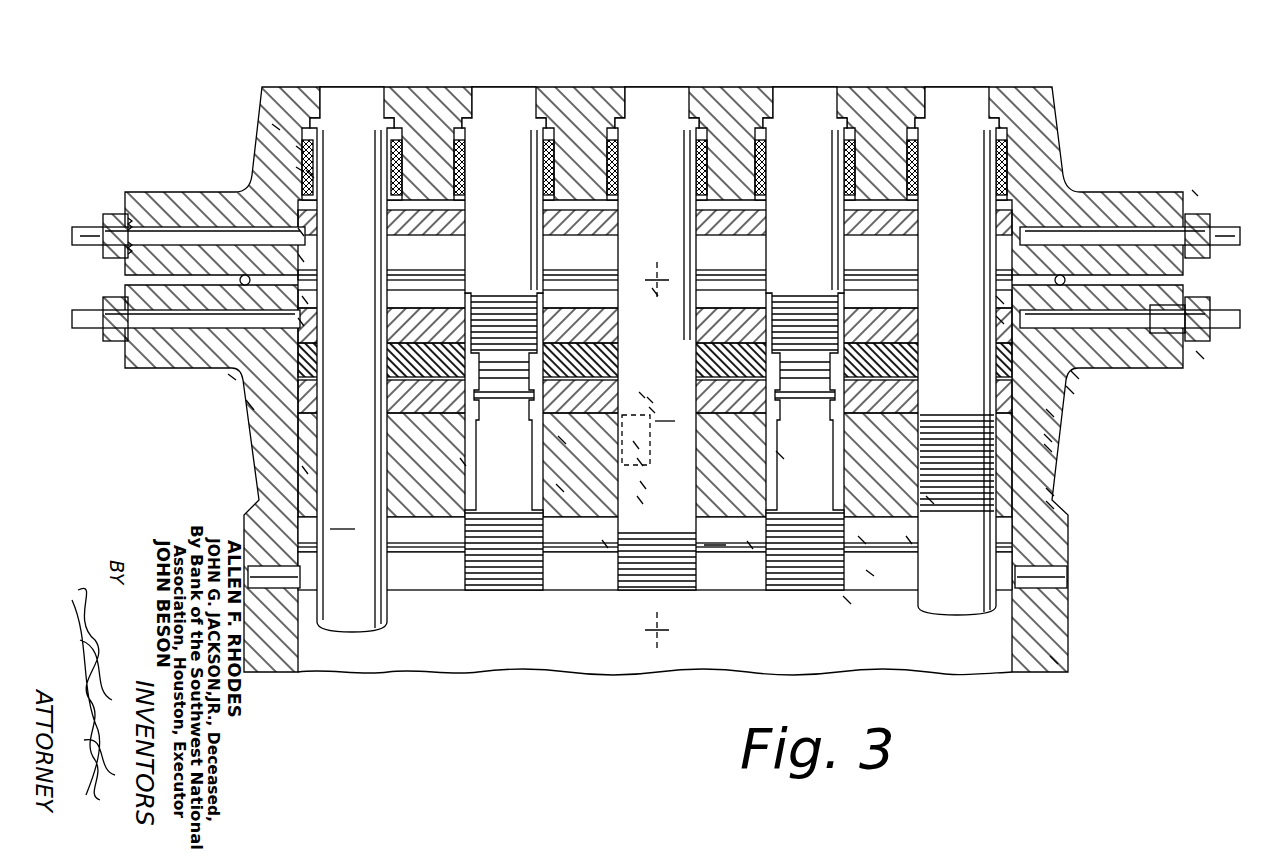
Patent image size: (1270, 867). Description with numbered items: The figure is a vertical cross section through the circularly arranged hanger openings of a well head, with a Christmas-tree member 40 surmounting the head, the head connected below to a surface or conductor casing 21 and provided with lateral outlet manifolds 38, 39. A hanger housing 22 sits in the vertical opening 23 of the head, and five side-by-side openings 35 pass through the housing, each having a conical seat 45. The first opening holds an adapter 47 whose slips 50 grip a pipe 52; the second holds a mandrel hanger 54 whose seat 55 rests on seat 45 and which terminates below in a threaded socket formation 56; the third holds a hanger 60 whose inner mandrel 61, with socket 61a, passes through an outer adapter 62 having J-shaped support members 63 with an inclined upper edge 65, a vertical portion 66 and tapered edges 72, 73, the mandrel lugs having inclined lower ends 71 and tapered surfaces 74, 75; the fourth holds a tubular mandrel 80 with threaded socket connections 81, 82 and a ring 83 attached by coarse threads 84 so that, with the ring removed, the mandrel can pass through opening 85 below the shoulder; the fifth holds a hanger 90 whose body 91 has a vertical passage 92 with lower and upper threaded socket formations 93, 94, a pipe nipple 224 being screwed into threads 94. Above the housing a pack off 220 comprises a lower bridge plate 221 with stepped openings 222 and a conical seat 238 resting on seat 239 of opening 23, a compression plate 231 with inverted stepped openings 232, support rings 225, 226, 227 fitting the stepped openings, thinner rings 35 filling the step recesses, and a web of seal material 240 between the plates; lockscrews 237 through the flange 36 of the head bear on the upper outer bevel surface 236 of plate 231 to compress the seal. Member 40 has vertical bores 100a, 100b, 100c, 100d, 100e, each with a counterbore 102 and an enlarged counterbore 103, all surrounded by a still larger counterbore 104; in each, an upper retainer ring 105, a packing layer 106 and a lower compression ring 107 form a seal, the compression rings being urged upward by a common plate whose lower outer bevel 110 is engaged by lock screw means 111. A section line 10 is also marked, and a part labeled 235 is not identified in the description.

The bore 100a is at (360, 88).
The bore 100b is at (510, 88).
The bore 100c is at (663, 88).
The bore 100d is at (812, 88).
The bore 100e is at (962, 88).
The Christmas-tree assembly member 40 is at (1062, 160).
The conical seat 45 is at (1213, 172).
The lock screw means 111 is at (82, 225).
The upper retainer ring 105 is at (275, 127).
The enlarged counterbore 103 is at (300, 150).
The lower compression ring 107 is at (300, 170).
The counterbore 102 is at (378, 132).
The packing material layer 106 is at (312, 172).
The lower outer bevel 110 is at (300, 232).
The larger counterbore 104 is at (300, 258).
The stepped openings 232 is at (305, 300).
The compression plate 231 is at (300, 322).
The conical seat 239 is at (305, 355).
The stepped openings 222 is at (300, 385).
The support ring 225 is at (400, 290).
The bushing 235 is at (448, 320).
The conical seat 238 is at (232, 377).
The slips 50 is at (250, 405).
The adapter 47 is at (262, 430).
The opening 35 is at (305, 470).
The pipe 52 is at (342, 521).
The lateral outlet manifold 38 is at (300, 580).
The mandrel hanger 54 is at (445, 568).
The seat 55 is at (655, 534).
The threaded socket formation 56 is at (490, 600).
The outer adapter 62 is at (562, 440).
The hanger 60 is at (560, 488).
The tapered edge 72 is at (605, 545).
The socket 61a is at (617, 598).
The section line 10 is at (640, 455).
The support ring 226 is at (655, 292).
The tapered surface 74 is at (642, 395).
The tapered surface 75 is at (650, 400).
The vertical portion 66 is at (652, 410).
The inner mandrel 61 is at (665, 413).
The lower end 71 is at (636, 445).
The upper edge 65 is at (640, 462).
The tapered edge 73 is at (643, 485).
The J-shaped support member 63 is at (640, 500).
The threaded socket connection 82 is at (780, 305).
The opening 85 is at (750, 545).
The threaded socket connection 81 is at (815, 590).
The tubular mandrel 80 is at (847, 600).
The coarse threads 84 is at (870, 572).
The ring 83 is at (862, 540).
The lower threaded socket formation 93 is at (930, 500).
The upper threaded socket formation 94 is at (933, 420).
The pipe nipple 224 is at (958, 254).
The upper outer bevel surface 236 is at (1000, 300).
The support ring 227 is at (1000, 320).
The seal material web 240 is at (928, 345).
The lockscrew 237 is at (1230, 305).
The flange 36 is at (1200, 355).
The pack off 220 is at (1075, 375).
The bridge plate 221 is at (1070, 390).
The hanger 90 is at (1050, 413).
The vertical opening 23 is at (1048, 438).
The vertical passage 92 is at (1048, 448).
The hanger housing 22 is at (1050, 492).
The body 91 is at (1050, 505).
The lateral outlet manifold 39 is at (1068, 577).
The conductor casing 21 is at (1055, 660).